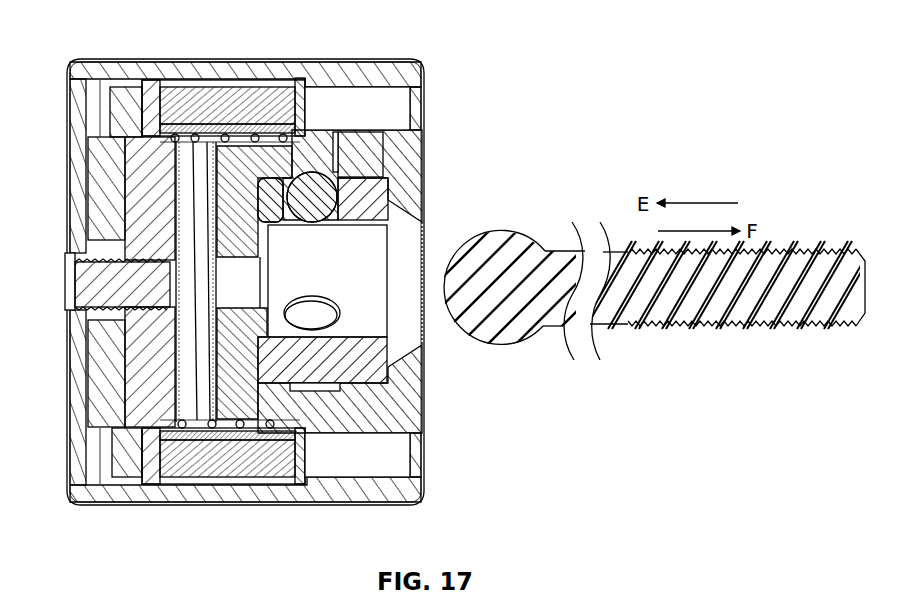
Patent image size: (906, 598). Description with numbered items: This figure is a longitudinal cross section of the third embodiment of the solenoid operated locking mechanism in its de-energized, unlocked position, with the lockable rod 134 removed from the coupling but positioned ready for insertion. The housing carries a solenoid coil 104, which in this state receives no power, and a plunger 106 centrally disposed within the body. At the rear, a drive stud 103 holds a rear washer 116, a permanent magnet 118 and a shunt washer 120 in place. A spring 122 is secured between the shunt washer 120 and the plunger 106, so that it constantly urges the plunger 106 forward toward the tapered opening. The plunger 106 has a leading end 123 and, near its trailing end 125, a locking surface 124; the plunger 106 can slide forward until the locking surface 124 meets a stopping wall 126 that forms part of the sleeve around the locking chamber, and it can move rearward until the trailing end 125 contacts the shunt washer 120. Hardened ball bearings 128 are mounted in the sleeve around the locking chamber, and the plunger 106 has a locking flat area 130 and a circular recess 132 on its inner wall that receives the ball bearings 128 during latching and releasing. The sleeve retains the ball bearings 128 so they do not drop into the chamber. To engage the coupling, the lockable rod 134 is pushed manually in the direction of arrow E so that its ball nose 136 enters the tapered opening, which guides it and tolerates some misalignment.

The drive stud 103 is at (73, 273).
The solenoid coil 104 is at (262, 470).
The plunger 106 is at (337, 172).
The rear washer 116 is at (82, 376).
The permanent magnet 118 is at (100, 178).
The shunt washer 120 is at (142, 163).
The spring 122 is at (196, 135).
The leading end 123 is at (370, 155).
The locking surface 124 is at (243, 178).
The trailing end 125 is at (226, 218).
The stopping wall 126 is at (270, 225).
The ball bearings 128 is at (323, 200).
The locking flat area 130 is at (380, 122).
The circular recess 132 is at (338, 172).
The lockable rod 134 is at (667, 324).
The ball nose 136 is at (515, 242).